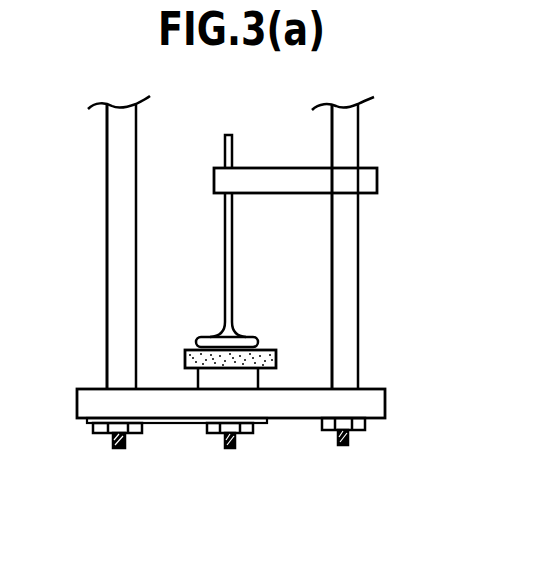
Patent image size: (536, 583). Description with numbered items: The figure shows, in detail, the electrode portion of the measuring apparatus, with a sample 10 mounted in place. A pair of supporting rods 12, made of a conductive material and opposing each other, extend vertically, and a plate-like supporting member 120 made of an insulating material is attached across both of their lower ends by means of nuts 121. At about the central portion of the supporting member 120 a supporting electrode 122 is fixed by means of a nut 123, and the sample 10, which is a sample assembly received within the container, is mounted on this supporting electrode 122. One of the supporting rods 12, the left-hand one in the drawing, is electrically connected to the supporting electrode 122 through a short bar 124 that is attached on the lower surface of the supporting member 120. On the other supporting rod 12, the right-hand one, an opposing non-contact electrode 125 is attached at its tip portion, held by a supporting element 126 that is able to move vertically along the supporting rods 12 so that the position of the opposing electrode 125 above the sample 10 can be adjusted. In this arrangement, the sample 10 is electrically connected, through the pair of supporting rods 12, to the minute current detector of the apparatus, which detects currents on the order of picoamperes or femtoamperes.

The sample 10 is at (265, 352).
The supporting rod 12 is at (113, 233).
The supporting member 120 is at (310, 420).
The nut 121 is at (102, 433).
The supporting electrode 122 is at (197, 425).
The nut 123 is at (245, 435).
The short bar 124 is at (158, 425).
The opposing electrode 125 is at (232, 305).
The supporting element 126 is at (377, 178).